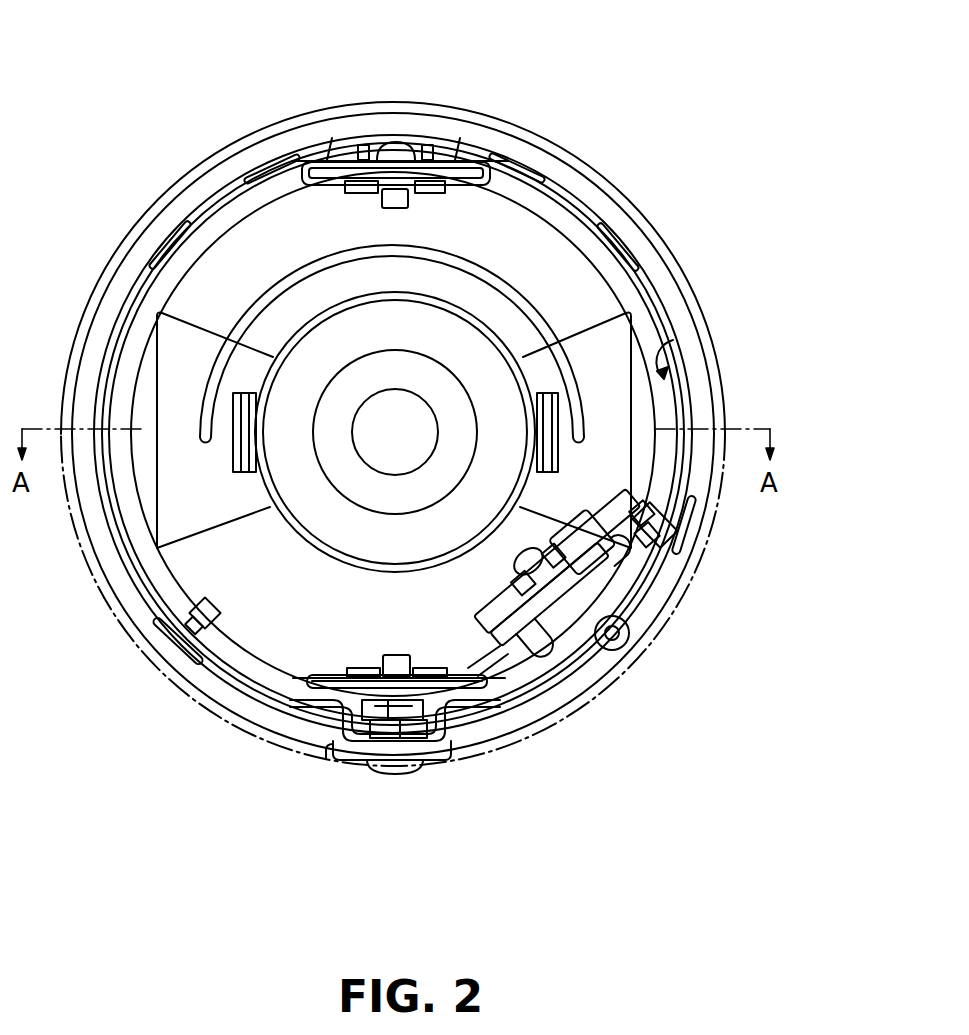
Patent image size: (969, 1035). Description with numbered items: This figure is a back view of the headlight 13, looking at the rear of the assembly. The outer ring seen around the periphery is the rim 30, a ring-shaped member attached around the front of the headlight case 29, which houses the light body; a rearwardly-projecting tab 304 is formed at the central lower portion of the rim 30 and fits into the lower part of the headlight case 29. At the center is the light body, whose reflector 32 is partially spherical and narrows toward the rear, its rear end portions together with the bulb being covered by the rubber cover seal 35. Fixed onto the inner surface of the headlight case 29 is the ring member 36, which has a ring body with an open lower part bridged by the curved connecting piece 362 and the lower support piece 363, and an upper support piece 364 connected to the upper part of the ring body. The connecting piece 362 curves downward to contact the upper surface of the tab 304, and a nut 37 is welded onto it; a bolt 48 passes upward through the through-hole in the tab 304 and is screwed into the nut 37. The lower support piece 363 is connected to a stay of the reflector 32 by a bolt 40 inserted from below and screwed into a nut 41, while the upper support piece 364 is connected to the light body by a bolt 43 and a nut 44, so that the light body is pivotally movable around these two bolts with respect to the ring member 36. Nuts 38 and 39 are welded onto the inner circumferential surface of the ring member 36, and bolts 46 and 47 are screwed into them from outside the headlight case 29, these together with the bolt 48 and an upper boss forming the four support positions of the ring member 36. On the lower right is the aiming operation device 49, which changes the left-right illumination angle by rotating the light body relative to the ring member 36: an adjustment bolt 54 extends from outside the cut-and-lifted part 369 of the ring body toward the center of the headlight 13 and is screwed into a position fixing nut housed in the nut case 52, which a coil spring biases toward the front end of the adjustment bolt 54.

The headlight 13 is at (188, 85).
The headlight case 29 is at (140, 583).
The rim 30 is at (618, 178).
The reflector 32 is at (588, 300).
The rubber cover seal 35 is at (320, 522).
The ring member 36 is at (673, 340).
The nut 37 is at (440, 735).
The nut 38 is at (215, 615).
The nut 39 is at (686, 488).
The bolt 40 is at (346, 728).
The nut 41 is at (388, 658).
The bolt 43 is at (396, 142).
The nut 44 is at (384, 200).
The bolt 46 is at (170, 650).
The bolt 47 is at (700, 527).
The bolt 48 is at (408, 772).
The aiming operation device 49 is at (553, 534).
The nut case 52 is at (597, 528).
The adjustment bolt 54 is at (582, 610).
The tab 304 is at (352, 752).
The connecting piece 362 is at (364, 750).
The lower support piece 363 is at (462, 668).
The upper support piece 364 is at (462, 185).
The cut-and-lifted part 369 is at (606, 650).